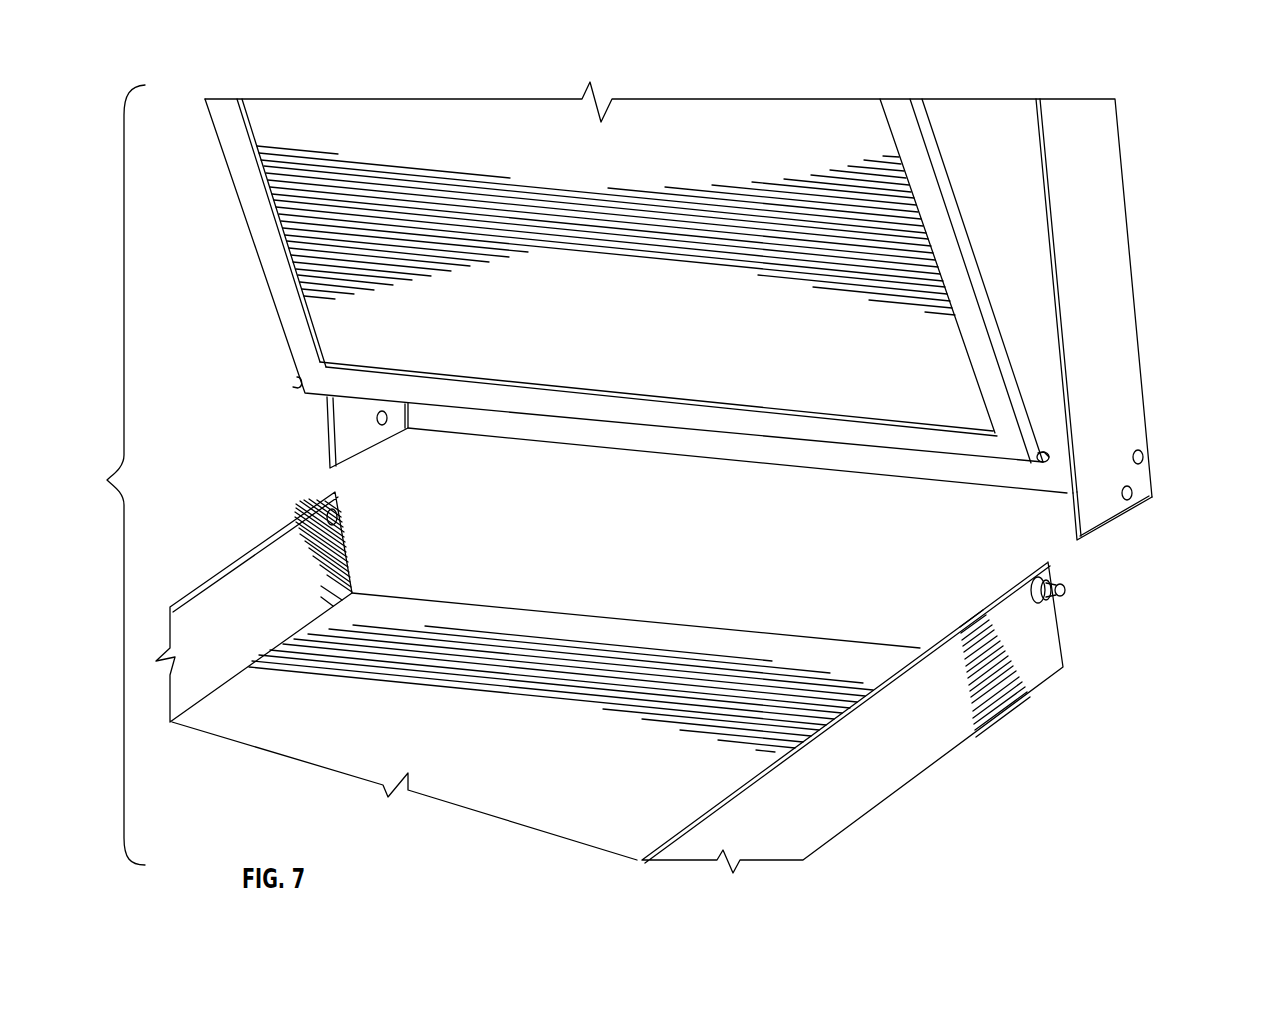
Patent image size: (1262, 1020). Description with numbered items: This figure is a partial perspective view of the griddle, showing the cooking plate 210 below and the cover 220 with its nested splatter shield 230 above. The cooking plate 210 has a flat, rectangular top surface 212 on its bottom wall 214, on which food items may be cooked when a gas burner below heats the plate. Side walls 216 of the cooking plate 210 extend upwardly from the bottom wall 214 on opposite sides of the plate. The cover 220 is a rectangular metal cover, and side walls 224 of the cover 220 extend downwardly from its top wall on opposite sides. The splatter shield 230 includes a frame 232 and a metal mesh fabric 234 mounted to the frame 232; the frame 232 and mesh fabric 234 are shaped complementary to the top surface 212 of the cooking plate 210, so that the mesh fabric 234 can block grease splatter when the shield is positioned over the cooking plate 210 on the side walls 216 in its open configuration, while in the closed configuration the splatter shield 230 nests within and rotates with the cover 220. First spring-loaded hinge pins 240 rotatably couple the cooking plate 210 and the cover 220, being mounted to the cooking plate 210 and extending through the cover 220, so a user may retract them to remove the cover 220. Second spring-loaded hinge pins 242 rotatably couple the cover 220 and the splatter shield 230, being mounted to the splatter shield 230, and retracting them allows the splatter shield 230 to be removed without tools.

The cooking plate 210 is at (609, 685).
The top surface 212 is at (461, 724).
The bottom wall 214 is at (565, 778).
The side walls 216 is at (228, 564).
The cover 220 is at (990, 98).
The side walls 224 is at (318, 425).
The splatter shield 230 is at (737, 120).
The frame 232 is at (573, 405).
The mesh fabric 234 is at (655, 358).
The first spring-loaded hinge pins 240 is at (340, 515).
The second spring-loaded hinge pins 242 is at (293, 382).